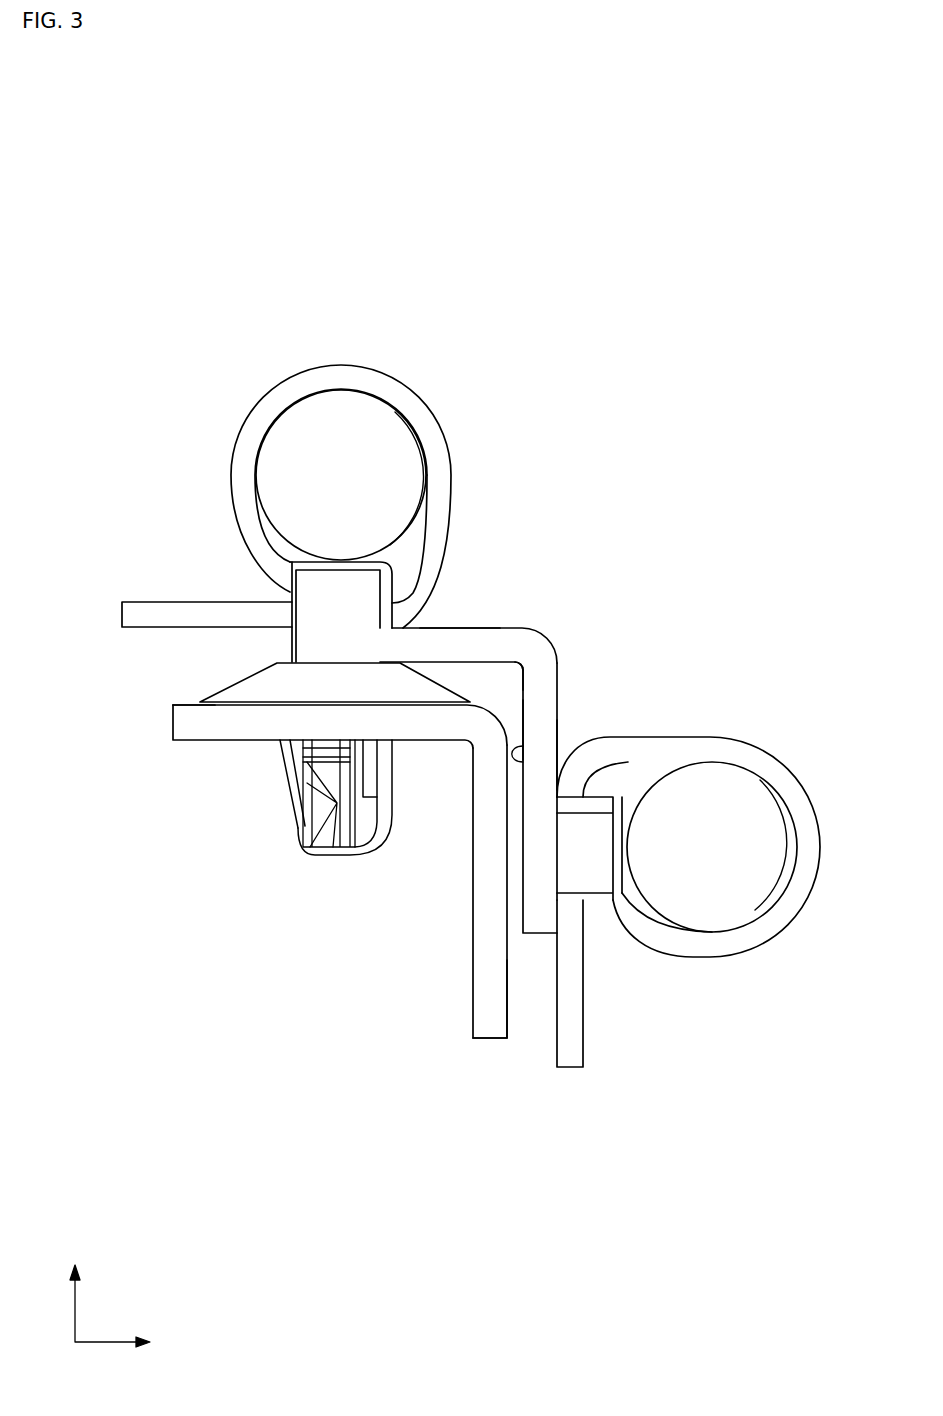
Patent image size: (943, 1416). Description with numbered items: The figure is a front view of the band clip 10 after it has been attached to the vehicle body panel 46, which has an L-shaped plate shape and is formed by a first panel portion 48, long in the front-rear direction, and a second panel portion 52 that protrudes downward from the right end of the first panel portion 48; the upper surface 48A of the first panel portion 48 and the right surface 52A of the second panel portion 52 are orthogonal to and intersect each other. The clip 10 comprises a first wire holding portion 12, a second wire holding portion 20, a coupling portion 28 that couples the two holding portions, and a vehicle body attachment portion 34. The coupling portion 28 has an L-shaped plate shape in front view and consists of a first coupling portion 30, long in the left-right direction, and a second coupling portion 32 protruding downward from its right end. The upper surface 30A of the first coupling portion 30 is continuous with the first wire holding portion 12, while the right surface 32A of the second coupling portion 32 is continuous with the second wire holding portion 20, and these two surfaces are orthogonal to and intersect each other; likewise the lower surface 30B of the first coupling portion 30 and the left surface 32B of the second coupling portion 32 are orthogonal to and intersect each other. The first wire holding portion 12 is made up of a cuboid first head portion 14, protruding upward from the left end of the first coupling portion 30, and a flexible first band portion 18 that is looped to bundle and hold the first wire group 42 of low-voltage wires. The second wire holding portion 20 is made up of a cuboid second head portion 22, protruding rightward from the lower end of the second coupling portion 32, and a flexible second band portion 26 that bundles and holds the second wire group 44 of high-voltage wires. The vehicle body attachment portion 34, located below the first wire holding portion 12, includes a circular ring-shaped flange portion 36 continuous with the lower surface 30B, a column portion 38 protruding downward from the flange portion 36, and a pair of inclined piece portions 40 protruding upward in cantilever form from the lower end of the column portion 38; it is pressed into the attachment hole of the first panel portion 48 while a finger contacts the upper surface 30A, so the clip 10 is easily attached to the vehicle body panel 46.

The clip 10 is at (474, 351).
The first wire holding portion 12 is at (101, 470).
The first head portion 14 is at (332, 587).
The first band portion 18 is at (247, 449).
The first wire group 42 is at (327, 424).
The coupling portion 28 is at (660, 565).
The first coupling portion 30 is at (470, 643).
The upper surface of first coupling portion 30A is at (458, 627).
The lower surface of first coupling portion 30B is at (470, 665).
The second coupling portion 32 is at (557, 735).
The right surface of second coupling portion 32A is at (542, 723).
The left surface of second coupling portion 32B is at (557, 760).
The second wire holding portion 20 is at (742, 985).
The second head portion 22 is at (567, 880).
The second band portion 26 is at (660, 935).
The second wire group 44 is at (740, 797).
The vehicle body panel 46 is at (520, 1119).
The first panel portion 48 is at (422, 720).
The upper surface of first panel portion 48A is at (186, 703).
The second panel portion 52 is at (488, 1022).
The right surface of second panel portion 52A is at (507, 998).
The vehicle body attachment portion 34 is at (352, 918).
The flange portion 36 is at (263, 683).
The column portion 38 is at (300, 828).
The inclined piece portions 40 is at (330, 837).